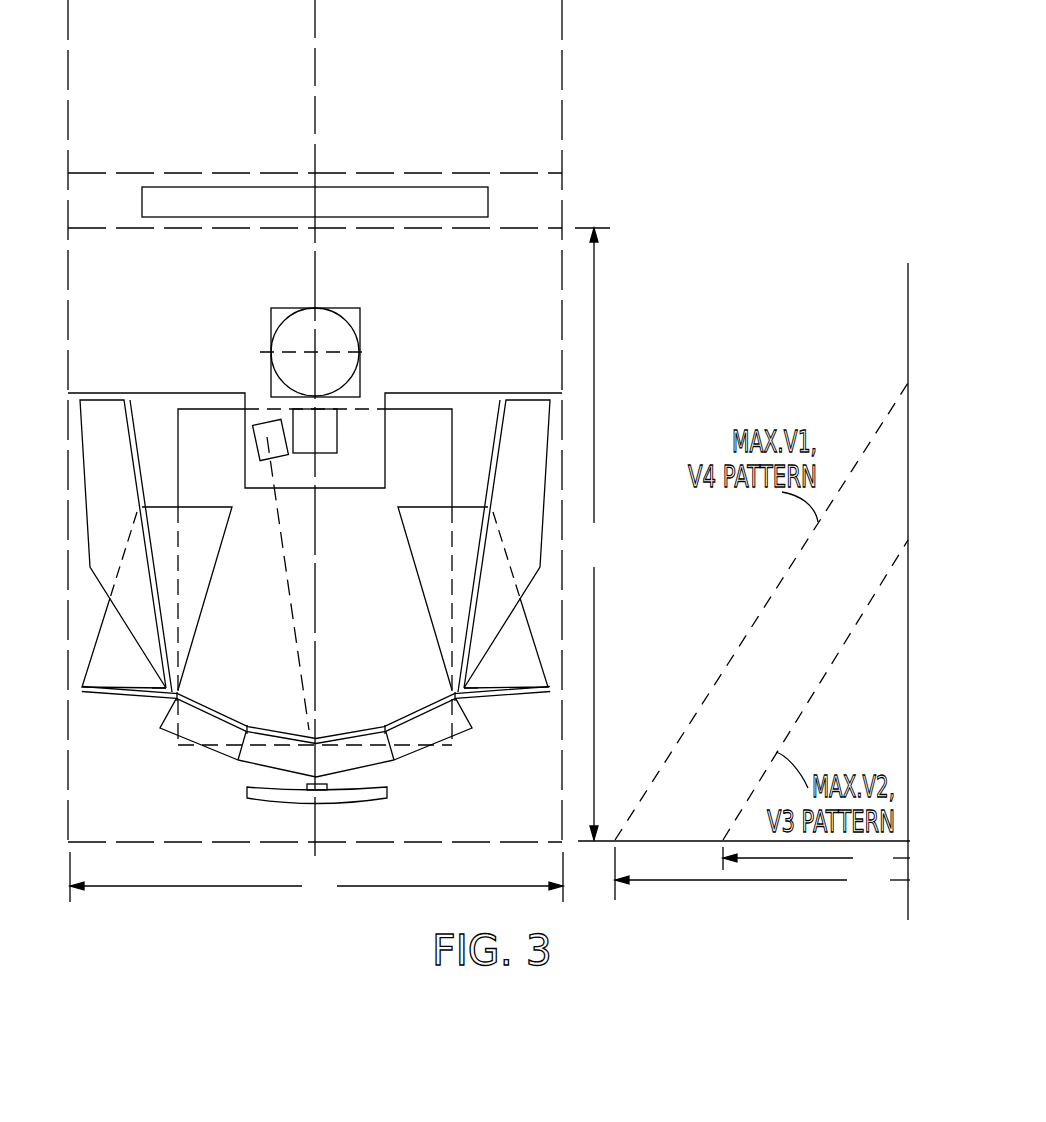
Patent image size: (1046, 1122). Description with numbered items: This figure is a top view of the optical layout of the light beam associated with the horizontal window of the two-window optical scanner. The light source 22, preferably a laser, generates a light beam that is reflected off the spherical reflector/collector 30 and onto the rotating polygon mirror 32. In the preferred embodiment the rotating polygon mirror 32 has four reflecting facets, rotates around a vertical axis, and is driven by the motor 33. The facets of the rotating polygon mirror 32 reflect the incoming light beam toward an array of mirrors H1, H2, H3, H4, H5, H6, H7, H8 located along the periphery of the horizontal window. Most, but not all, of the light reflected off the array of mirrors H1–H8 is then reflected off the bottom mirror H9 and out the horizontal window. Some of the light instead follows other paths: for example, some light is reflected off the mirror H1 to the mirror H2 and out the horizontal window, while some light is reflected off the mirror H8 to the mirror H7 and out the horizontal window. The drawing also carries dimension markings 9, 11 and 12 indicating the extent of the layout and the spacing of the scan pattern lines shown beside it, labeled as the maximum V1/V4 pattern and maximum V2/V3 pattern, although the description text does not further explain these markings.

The light source 22 is at (268, 427).
The spherical reflector/collector 30 is at (293, 803).
The rotating polygon mirror 32 is at (357, 378).
The motor 33 is at (360, 319).
The scanner width 9 is at (316, 879).
The scanner height 11 is at (592, 534).
The pattern offset distance 12 is at (762, 873).
The mirror H1 is at (123, 504).
The mirror H2 is at (217, 544).
The mirror H3 is at (205, 728).
The mirror H4 is at (248, 762).
The mirror H5 is at (375, 758).
The mirror H6 is at (428, 728).
The mirror H7 is at (445, 543).
The mirror H8 is at (535, 504).
The bottom mirror H9 is at (373, 575).